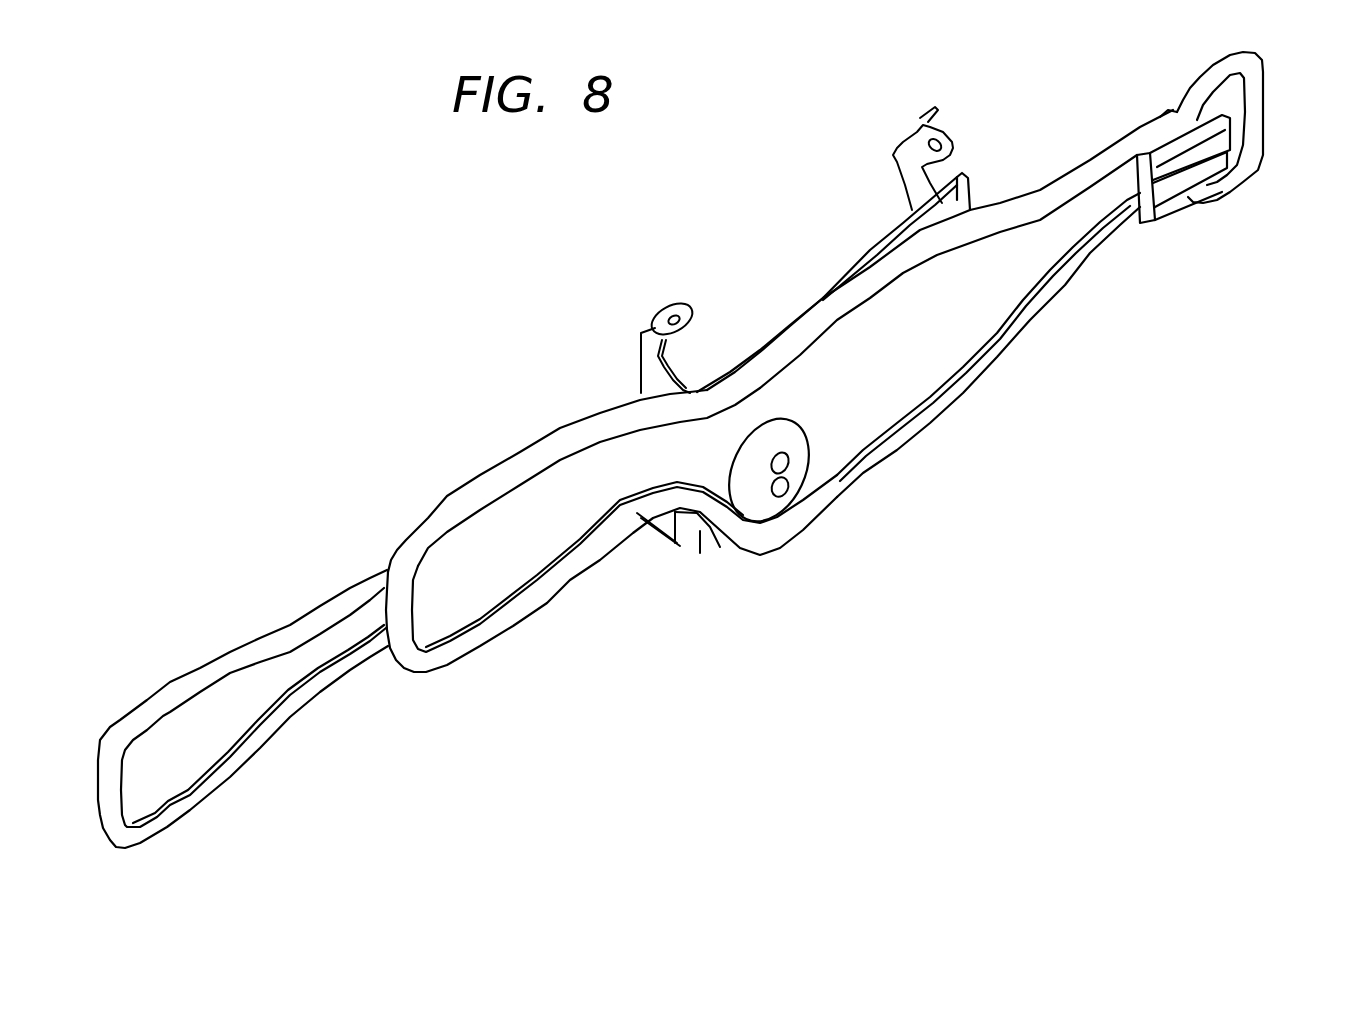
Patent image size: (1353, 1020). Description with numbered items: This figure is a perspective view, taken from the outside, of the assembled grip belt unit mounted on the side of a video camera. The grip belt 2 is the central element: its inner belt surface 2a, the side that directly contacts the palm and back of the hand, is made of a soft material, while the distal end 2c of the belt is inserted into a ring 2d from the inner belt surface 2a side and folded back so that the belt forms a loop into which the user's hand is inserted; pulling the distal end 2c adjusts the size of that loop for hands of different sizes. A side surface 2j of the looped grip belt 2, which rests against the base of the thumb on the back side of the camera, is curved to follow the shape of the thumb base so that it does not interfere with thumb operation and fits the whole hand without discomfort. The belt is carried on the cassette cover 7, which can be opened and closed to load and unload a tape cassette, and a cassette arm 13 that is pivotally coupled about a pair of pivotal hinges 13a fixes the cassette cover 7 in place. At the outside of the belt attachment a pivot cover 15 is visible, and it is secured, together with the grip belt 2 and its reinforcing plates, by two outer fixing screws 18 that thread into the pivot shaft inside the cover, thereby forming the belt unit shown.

The grip belt 2 is at (583, 323).
The inner belt surface 2a is at (987, 308).
The distal end 2c is at (168, 788).
The ring 2d is at (1263, 63).
The side surface 2j is at (662, 507).
The cassette cover 7 is at (695, 547).
The cassette arm 13 is at (893, 148).
The pivotal hinges 13a is at (948, 128).
The pivot cover 15 is at (756, 512).
The outer fixing screws 18 is at (788, 462).